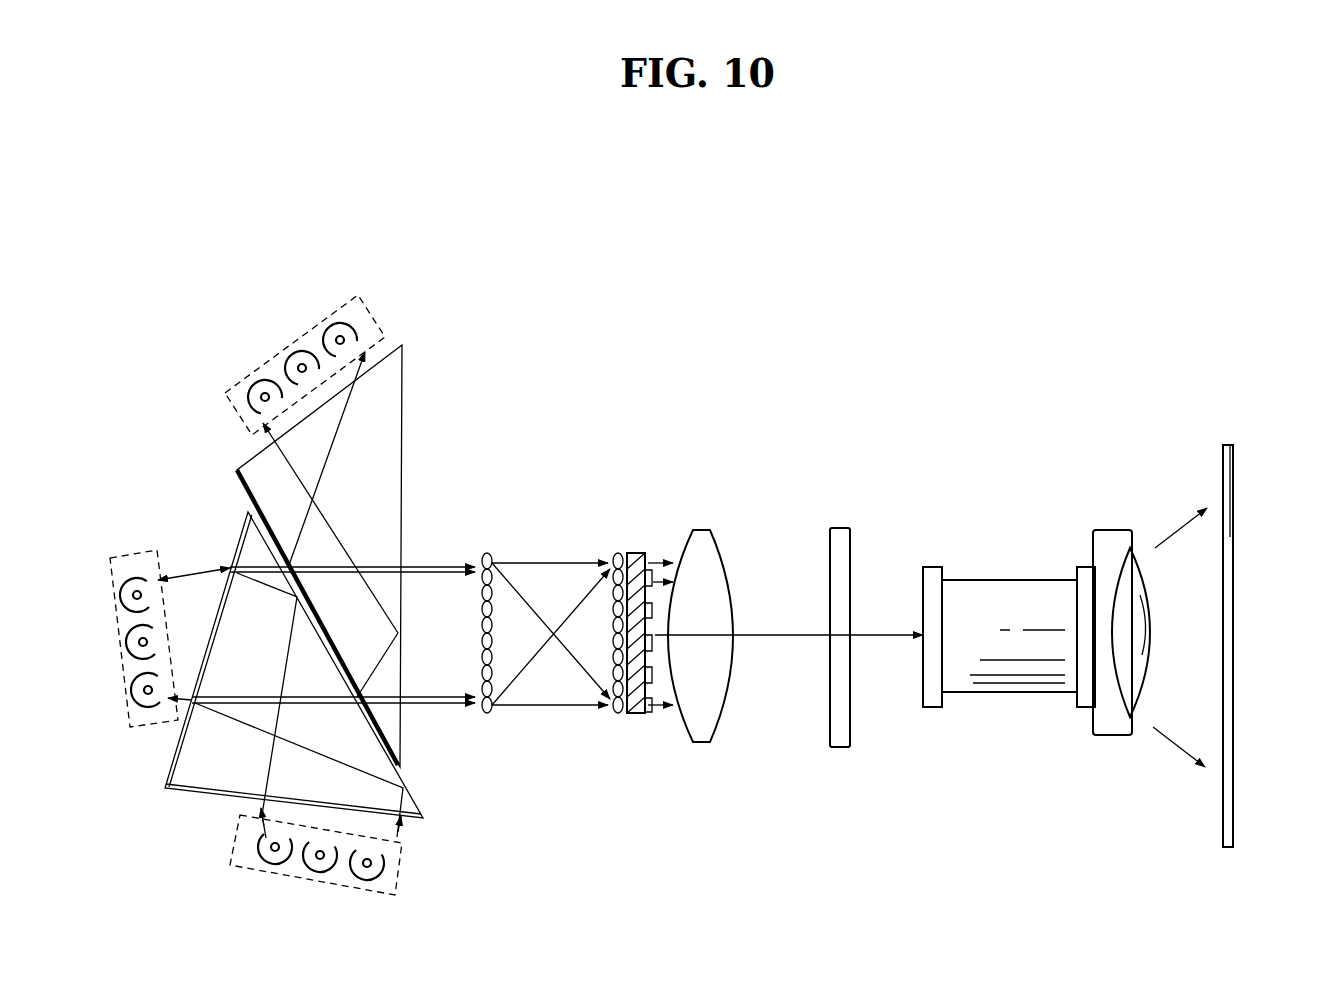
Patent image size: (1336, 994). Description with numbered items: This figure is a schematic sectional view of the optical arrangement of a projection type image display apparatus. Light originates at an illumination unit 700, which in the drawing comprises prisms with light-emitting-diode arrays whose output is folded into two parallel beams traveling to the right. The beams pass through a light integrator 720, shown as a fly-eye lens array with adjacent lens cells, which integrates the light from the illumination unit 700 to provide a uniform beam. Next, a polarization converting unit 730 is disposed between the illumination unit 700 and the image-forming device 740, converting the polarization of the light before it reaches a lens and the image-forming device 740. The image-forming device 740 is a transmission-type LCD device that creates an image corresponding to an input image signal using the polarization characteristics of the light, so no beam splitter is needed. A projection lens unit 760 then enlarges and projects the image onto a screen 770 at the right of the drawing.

The illumination unit 700 is at (406, 290).
The light integrator 720 is at (543, 552).
The polarization converting unit 730 is at (637, 713).
The image-forming device 740 is at (840, 525).
The projection lens unit 760 is at (1000, 553).
The screen 770 is at (1232, 802).